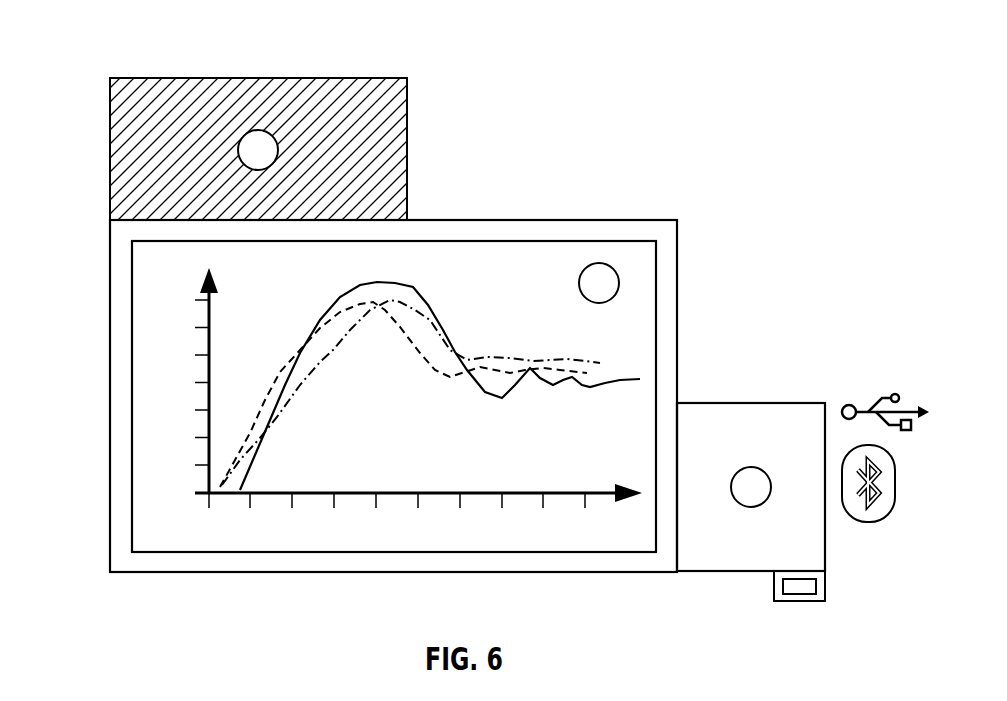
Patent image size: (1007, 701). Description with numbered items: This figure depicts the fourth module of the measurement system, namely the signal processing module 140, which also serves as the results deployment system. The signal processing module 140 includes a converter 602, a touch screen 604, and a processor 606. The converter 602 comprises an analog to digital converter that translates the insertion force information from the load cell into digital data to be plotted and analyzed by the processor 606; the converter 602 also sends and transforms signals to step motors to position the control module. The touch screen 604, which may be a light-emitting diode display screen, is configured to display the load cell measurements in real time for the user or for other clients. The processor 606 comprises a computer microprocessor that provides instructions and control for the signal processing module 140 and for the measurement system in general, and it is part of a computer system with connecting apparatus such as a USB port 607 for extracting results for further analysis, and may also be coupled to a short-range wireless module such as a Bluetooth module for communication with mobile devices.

The signal processing module 140 is at (134, 32).
The converter 602 is at (408, 97).
The touch screen 604 is at (593, 241).
The processor 606 is at (758, 403).
The USB port 607 is at (883, 393).